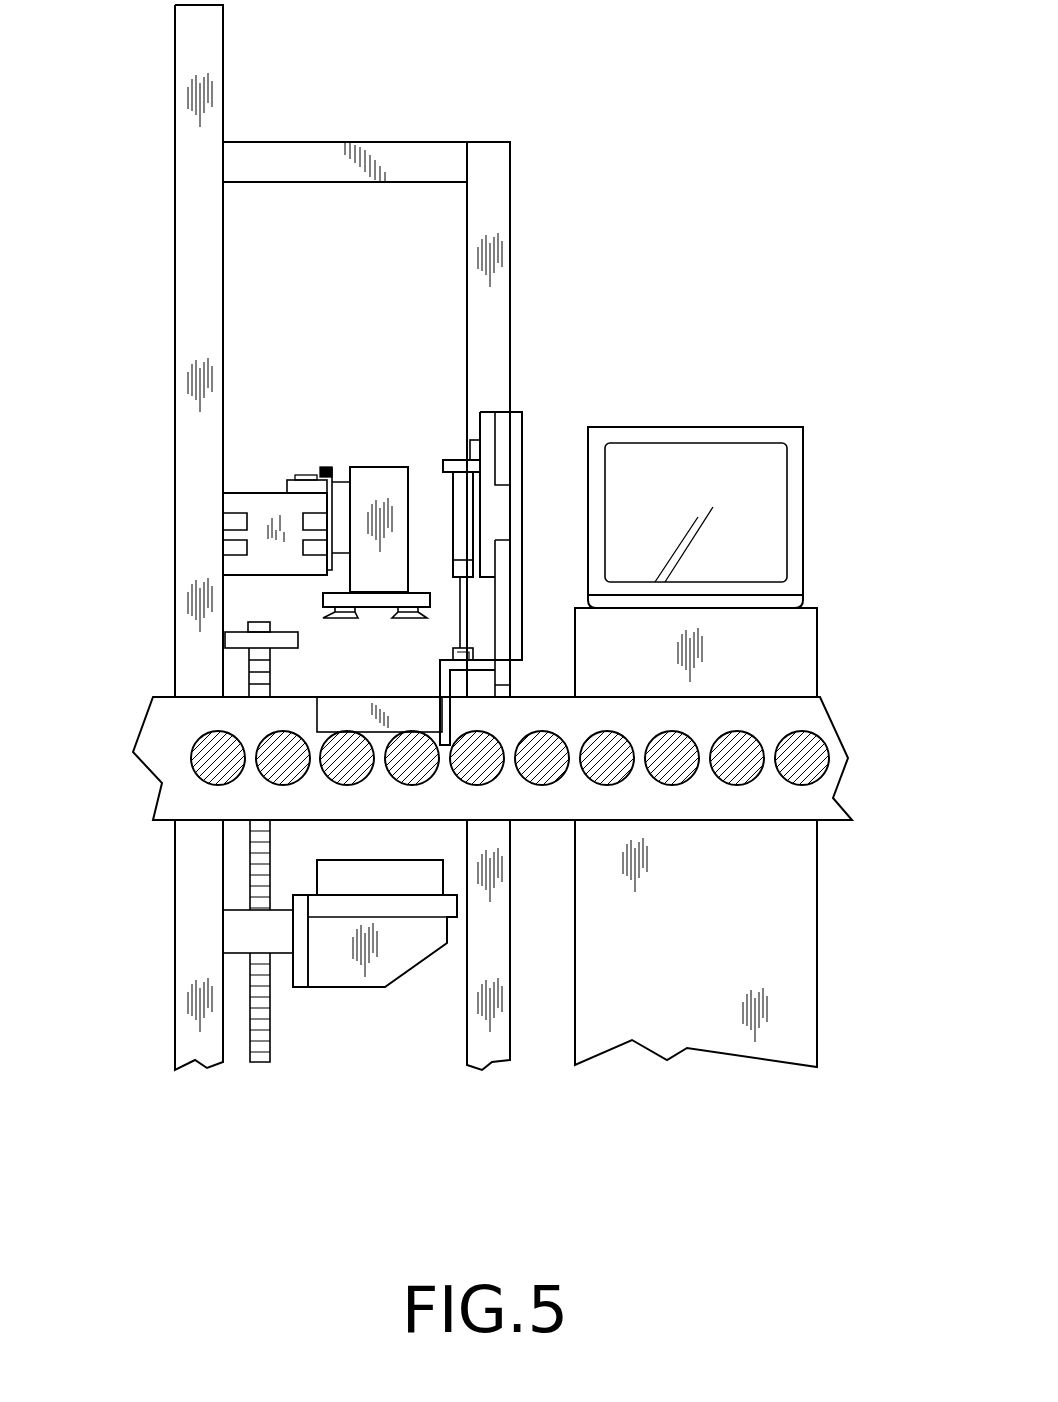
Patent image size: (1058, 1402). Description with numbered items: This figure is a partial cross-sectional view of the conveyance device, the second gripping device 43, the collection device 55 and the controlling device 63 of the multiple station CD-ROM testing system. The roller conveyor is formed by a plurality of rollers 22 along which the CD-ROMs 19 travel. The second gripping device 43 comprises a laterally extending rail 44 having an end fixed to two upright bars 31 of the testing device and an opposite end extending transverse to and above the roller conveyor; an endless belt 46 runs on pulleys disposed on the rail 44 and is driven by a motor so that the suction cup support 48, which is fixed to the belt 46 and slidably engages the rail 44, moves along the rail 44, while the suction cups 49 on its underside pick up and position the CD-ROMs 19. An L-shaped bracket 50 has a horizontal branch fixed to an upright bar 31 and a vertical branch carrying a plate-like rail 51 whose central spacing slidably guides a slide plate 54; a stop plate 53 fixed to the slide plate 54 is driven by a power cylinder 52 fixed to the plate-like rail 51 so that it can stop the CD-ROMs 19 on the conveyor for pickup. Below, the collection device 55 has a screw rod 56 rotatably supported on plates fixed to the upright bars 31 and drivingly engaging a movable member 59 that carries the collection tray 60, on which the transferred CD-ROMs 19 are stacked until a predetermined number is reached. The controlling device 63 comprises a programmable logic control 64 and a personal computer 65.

The CD-ROMs 19 is at (415, 888).
The rollers 22 is at (803, 770).
The upright bars 31 is at (200, 163).
The second gripping device 43 is at (323, 115).
The rail 44 is at (233, 563).
The endless belt 46 is at (303, 488).
The suction cup support 48 is at (378, 468).
The suction cups 49 is at (337, 615).
The L-shaped bracket 50 is at (422, 158).
The plate-like rail 51 is at (515, 423).
The power cylinder 52 is at (460, 515).
The stop plate 53 is at (450, 705).
The slide plate 54 is at (503, 632).
The collection device 55 is at (349, 1140).
The screw rod 56 is at (262, 1000).
The movable member 59 is at (303, 938).
The collection tray 60 is at (332, 905).
The controlling device 63 is at (822, 1095).
The programmable logic control 64 is at (798, 952).
The personal computer 65 is at (783, 507).